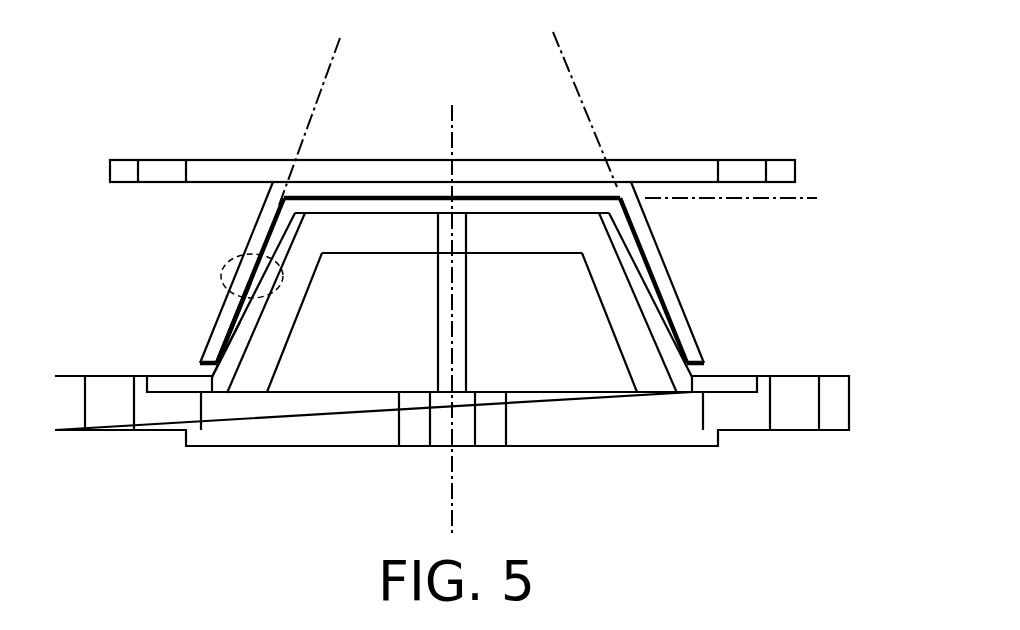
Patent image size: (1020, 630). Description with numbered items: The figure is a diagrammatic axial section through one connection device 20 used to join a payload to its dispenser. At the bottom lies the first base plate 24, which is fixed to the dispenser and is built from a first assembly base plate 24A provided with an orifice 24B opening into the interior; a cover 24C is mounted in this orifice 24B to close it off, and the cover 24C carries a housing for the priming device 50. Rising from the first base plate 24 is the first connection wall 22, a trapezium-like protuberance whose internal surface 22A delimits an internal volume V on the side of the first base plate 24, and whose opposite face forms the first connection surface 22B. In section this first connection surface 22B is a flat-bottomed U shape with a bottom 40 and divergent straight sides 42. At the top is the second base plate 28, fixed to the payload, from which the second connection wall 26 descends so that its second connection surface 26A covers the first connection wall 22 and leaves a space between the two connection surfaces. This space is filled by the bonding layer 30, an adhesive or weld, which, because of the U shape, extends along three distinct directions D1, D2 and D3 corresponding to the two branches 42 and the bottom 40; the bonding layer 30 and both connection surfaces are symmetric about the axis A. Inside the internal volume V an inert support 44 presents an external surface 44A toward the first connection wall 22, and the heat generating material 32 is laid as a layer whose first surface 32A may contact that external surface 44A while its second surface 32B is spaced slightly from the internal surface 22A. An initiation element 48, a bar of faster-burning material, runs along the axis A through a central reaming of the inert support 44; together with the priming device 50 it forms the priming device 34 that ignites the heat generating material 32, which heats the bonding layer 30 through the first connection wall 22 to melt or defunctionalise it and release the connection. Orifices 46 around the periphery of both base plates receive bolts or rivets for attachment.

The connection device 20 is at (700, 90).
The first connection wall 22 is at (657, 313).
The internal surface 22A is at (663, 347).
The first connection surface 22B is at (655, 272).
The first base plate 24 is at (860, 405).
The first assembly base plate 24A is at (747, 420).
The orifice 24B is at (700, 432).
The cover 24C is at (360, 423).
The second connection wall 26 is at (222, 323).
The second connection surface 26A is at (230, 340).
The second base plate 28 is at (803, 168).
The bonding layer 30 is at (234, 300).
The heat generating material 32 is at (272, 330).
The first surface of heat generating material 32A is at (627, 362).
The second surface of heat generating material 32B is at (568, 213).
The priming device 34 is at (470, 232).
The bottom 40 is at (533, 195).
The divergent straight sides 42 is at (207, 346).
The inert support 44 is at (567, 370).
The external surface 44A is at (392, 253).
The orifices 46 is at (147, 167).
The initiation element 48 is at (460, 290).
The priming device 50 is at (417, 435).
The axis A is at (454, 110).
The first direction D1 is at (337, 50).
The second direction D2 is at (562, 50).
The third direction D3 is at (757, 198).
The internal volume V is at (238, 257).